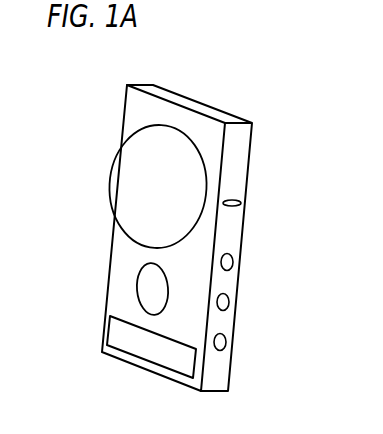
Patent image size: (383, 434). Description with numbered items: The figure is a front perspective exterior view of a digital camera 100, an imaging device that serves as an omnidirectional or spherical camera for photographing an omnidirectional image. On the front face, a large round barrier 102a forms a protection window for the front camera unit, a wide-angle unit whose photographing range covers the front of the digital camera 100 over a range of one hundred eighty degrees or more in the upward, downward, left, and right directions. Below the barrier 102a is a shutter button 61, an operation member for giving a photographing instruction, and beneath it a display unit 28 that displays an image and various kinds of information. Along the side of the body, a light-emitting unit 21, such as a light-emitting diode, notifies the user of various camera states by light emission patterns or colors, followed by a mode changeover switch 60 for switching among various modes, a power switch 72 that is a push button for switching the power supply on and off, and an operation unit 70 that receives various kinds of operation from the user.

The digital camera 100 is at (175, 95).
The barrier 102a is at (127, 181).
The light-emitting unit 21 is at (238, 203).
The mode changeover switch 60 is at (233, 258).
The power switch 72 is at (229, 298).
The operation unit 70 is at (226, 339).
The shutter button 61 is at (143, 288).
The display unit 28 is at (140, 346).